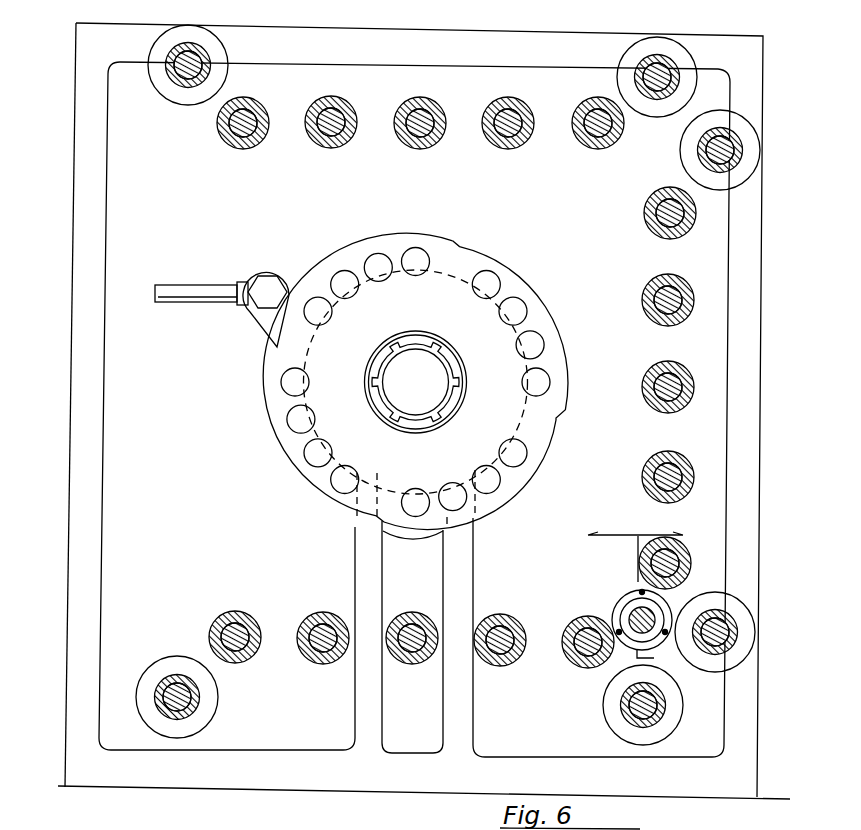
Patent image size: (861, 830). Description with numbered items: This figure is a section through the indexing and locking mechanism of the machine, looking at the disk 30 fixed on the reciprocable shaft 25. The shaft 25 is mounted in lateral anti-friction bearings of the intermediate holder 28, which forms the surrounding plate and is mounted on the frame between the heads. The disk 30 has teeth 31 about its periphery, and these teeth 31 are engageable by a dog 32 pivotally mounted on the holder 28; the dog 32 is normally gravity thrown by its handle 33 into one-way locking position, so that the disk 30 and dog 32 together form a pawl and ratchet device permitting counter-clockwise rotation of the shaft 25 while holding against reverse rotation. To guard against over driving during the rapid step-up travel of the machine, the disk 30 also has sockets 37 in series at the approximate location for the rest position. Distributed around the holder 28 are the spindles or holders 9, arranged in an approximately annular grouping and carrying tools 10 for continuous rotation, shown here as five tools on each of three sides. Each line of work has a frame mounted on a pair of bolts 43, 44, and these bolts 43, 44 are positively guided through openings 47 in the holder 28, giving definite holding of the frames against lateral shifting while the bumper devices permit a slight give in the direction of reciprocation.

The spindle or holder 9 is at (412, 142).
The tool 10 is at (573, 620).
The shaft 25 is at (424, 406).
The intermediate holder 28 is at (752, 253).
The disk 30 is at (480, 268).
The teeth 31 is at (458, 244).
The dog 32 is at (258, 330).
The handle 33 is at (153, 305).
The sockets 37 is at (420, 262).
The bolt 43 is at (662, 68).
The bolt 44 is at (207, 60).
The opening 47 is at (182, 707).